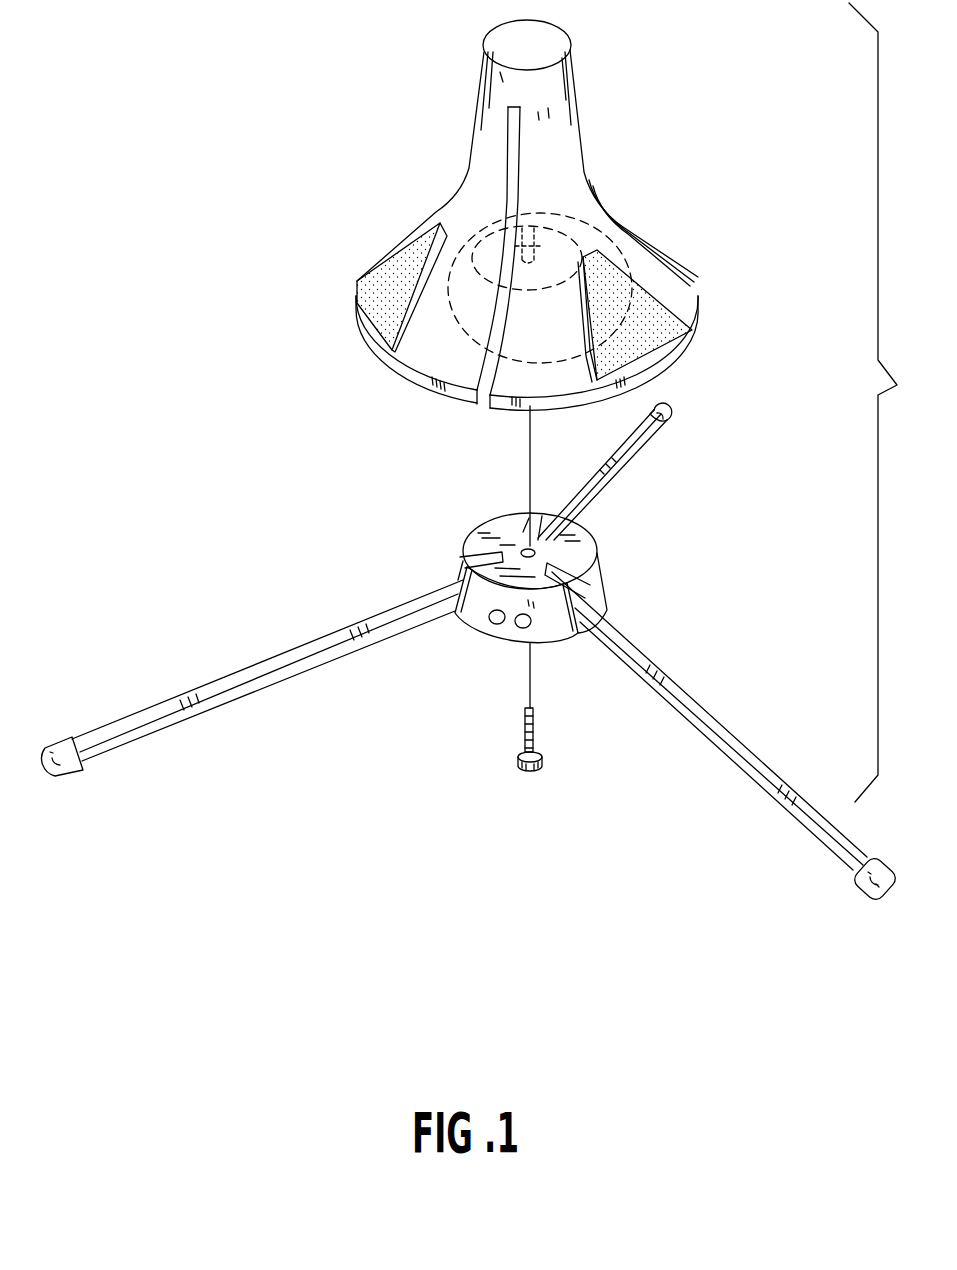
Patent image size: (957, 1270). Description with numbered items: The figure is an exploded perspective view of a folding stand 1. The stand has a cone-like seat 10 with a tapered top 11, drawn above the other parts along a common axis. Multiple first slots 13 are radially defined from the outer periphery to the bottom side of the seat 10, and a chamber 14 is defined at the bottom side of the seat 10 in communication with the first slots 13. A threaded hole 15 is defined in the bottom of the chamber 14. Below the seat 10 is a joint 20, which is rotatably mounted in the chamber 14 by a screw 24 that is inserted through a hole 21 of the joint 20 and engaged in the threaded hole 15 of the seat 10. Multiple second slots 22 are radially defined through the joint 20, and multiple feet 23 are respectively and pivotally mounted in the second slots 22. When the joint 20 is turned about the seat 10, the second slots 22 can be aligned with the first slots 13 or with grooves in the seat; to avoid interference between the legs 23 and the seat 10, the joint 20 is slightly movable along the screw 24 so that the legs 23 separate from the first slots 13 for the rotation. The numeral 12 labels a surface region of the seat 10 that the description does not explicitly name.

The folding stand 1 is at (322, 186).
The cone-like seat 10 is at (688, 294).
The tapered top 11 is at (558, 107).
The textured pads 12 is at (658, 342).
The first slots 13 is at (507, 150).
The chamber 14 is at (467, 330).
The threaded hole 15 is at (625, 213).
The joint 20 is at (538, 635).
The hole 21 is at (527, 548).
The second slots 22 is at (588, 580).
The feet 23 is at (612, 470).
The screw 24 is at (538, 730).